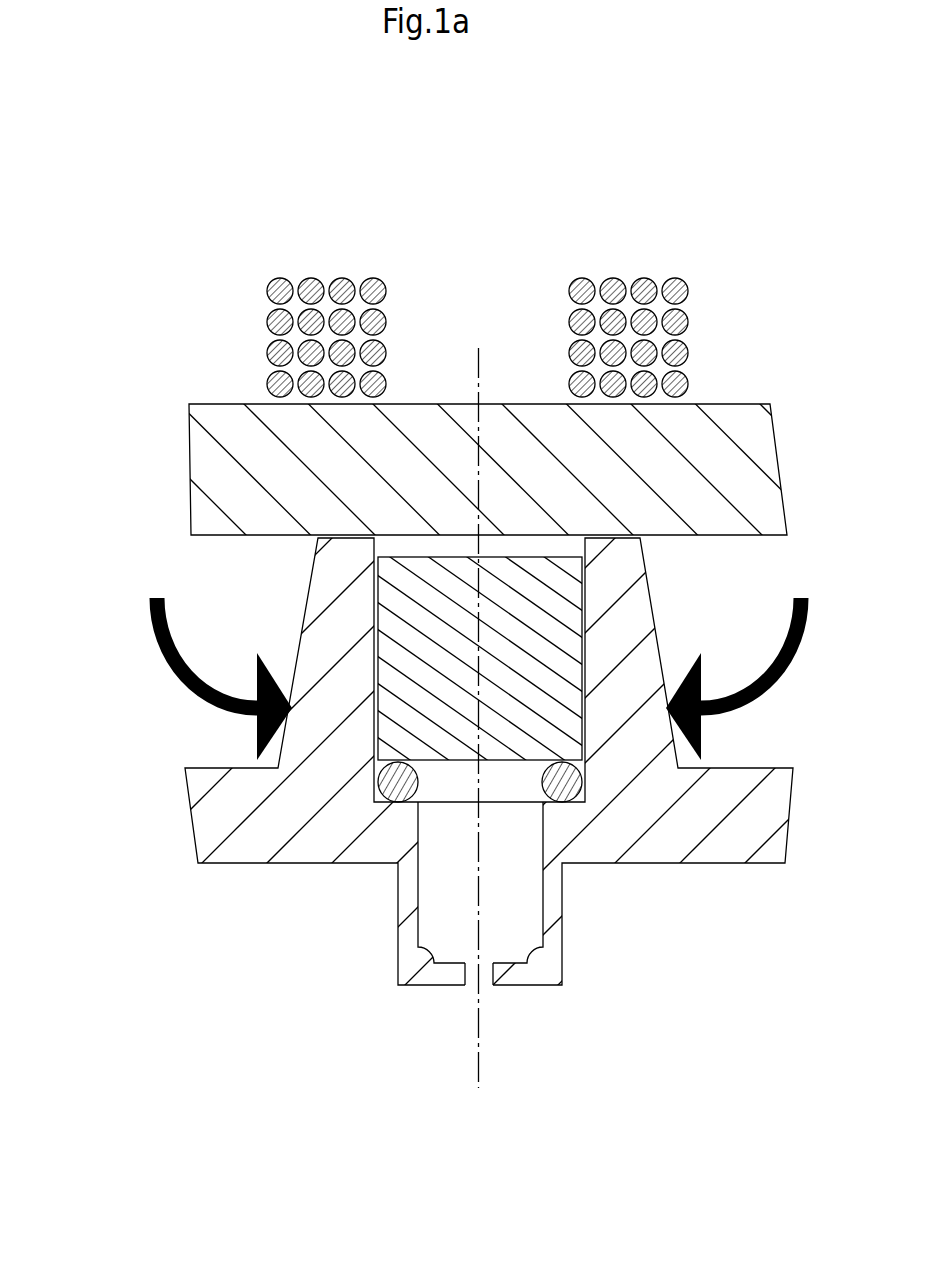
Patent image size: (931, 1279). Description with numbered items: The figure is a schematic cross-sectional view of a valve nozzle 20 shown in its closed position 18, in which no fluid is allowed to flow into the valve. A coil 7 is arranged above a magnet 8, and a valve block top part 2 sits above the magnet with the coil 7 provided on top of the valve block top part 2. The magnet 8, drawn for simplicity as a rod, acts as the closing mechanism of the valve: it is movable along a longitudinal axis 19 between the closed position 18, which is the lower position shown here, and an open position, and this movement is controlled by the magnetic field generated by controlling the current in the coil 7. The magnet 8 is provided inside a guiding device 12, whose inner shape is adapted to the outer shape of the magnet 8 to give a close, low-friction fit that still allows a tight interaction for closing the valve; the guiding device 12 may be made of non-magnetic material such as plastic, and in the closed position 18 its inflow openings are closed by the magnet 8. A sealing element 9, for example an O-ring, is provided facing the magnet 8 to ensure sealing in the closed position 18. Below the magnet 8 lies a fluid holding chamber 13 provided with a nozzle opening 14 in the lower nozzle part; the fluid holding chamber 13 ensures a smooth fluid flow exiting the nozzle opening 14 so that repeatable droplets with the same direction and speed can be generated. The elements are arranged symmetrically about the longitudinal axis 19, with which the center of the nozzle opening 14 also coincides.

The valve block top part 2 is at (737, 420).
The coil 7 is at (613, 278).
The magnet 8 is at (568, 578).
The sealing element 9 is at (382, 788).
The guiding device 12 is at (313, 610).
The fluid holding chamber 13 is at (433, 900).
The nozzle opening 14 is at (460, 978).
The closed position 18 is at (197, 690).
The longitudinal axis 19 is at (472, 373).
The valve nozzle 20 is at (202, 375).